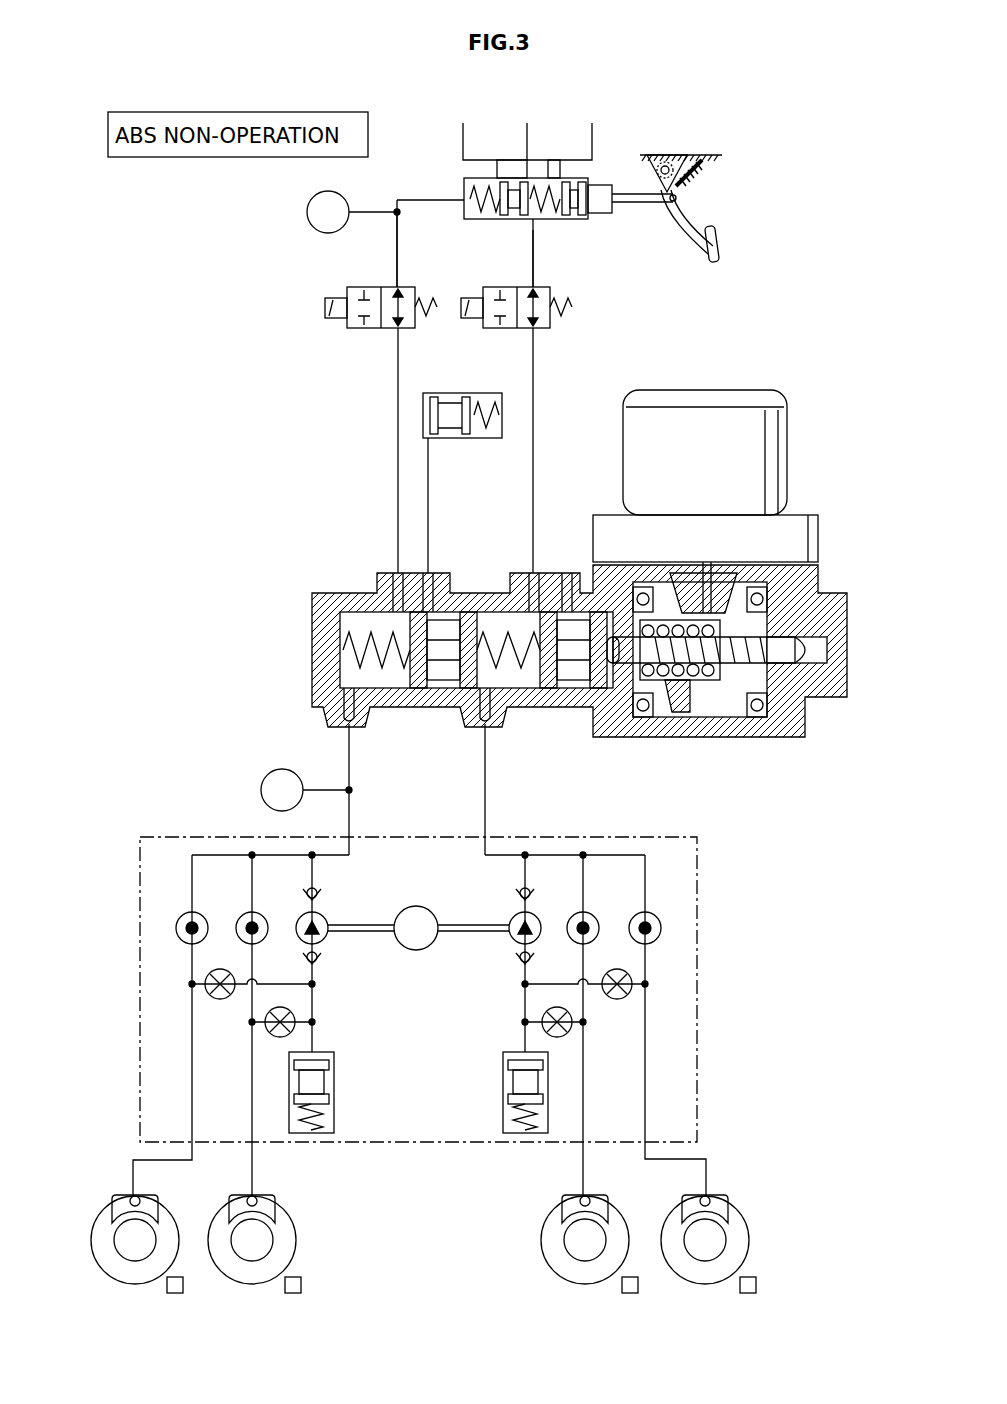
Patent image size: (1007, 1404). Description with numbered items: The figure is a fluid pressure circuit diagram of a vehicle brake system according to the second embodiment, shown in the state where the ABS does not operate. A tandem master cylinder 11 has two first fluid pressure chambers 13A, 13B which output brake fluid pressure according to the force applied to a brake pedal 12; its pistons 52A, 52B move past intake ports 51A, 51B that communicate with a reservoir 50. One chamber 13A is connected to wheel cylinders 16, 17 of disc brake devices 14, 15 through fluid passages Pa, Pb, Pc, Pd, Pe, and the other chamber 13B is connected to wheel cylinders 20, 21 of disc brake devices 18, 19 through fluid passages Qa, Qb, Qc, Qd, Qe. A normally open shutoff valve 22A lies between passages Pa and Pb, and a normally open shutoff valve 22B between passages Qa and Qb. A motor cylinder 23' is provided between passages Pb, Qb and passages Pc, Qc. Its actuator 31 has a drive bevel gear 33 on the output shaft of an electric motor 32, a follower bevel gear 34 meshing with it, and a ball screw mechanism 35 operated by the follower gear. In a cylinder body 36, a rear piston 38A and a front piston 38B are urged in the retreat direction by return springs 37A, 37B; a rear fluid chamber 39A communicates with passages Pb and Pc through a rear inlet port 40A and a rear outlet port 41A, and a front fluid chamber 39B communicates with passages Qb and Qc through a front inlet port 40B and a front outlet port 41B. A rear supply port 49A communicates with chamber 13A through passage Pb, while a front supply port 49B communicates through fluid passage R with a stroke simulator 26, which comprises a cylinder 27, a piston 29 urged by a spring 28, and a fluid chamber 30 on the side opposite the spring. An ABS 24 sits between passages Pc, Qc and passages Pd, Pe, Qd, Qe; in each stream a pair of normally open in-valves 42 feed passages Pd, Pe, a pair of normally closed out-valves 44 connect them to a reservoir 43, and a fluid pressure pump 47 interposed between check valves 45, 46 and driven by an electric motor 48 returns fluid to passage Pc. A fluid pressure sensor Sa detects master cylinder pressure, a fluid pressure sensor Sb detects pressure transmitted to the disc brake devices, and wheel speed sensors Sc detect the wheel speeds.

The tandem master cylinder 11 is at (458, 188).
The brake pedal 12 is at (720, 252).
The first fluid pressure chamber 13A is at (548, 220).
The first fluid pressure chamber 13B is at (488, 220).
The disc brake device 14 is at (542, 1226).
The disc brake device 15 is at (752, 1226).
The wheel cylinder 16 is at (575, 1199).
The wheel cylinder 17 is at (713, 1200).
The disc brake device 18 is at (298, 1226).
The disc brake device 19 is at (92, 1222).
The wheel cylinder 20 is at (264, 1197).
The wheel cylinder 21 is at (117, 1198).
The shutoff valve 22A is at (578, 300).
The shutoff valve 22B is at (336, 297).
The motor cylinder 23' is at (565, 623).
The ABS 24 is at (565, 835).
The stroke simulator 26 is at (462, 385).
The cylinder 27 is at (480, 397).
The spring 28 is at (484, 428).
The piston 29 is at (446, 405).
The fluid chamber 30 is at (428, 415).
The actuator 31 is at (722, 692).
The electric motor 32 is at (775, 487).
The drive bevel gear 33 is at (718, 588).
The follower bevel gear 34 is at (710, 700).
The ball screw mechanism 35 is at (660, 700).
The cylinder body 36 is at (470, 620).
The return spring 37A is at (538, 708).
The return spring 37B is at (380, 670).
The rear piston 38A is at (580, 640).
The front piston 38B is at (445, 628).
The rear fluid chamber 39A is at (500, 640).
The front fluid chamber 39B is at (355, 640).
The rear inlet port 40A is at (534, 600).
The front inlet port 40B is at (397, 600).
The rear outlet port 41A is at (485, 712).
The front outlet port 41B is at (343, 712).
The in-valve 42 is at (185, 914).
The reservoir 43 is at (340, 1095).
The out-valve 44 is at (221, 1000).
The check valve 45 is at (320, 962).
The check valve 46 is at (320, 888).
The fluid pressure pump 47 is at (326, 915).
The electric motor 48 is at (416, 950).
The rear supply port 49A is at (567, 600).
The front supply port 49B is at (428, 600).
The reservoir 50 is at (462, 143).
The intake port 51A is at (558, 176).
The intake port 51B is at (497, 176).
The piston 52A is at (575, 195).
The piston 52B is at (514, 195).
The fluid pressure sensor Sa is at (312, 226).
The fluid pressure sensor Sb is at (266, 782).
The vehicle wheel speed sensor Sc is at (197, 1274).
The fluid passage Qa is at (397, 262).
The fluid passage Qb is at (398, 472).
The fluid passage Qc is at (355, 792).
The fluid passage Qd is at (254, 1148).
The fluid passage Qe is at (194, 1148).
The fluid passage Pa is at (533, 273).
The fluid passage Pb is at (534, 522).
The fluid passage Pc is at (487, 800).
The fluid passage Pd is at (583, 1148).
The fluid passage Pe is at (645, 1148).
The fluid passage R is at (428, 455).